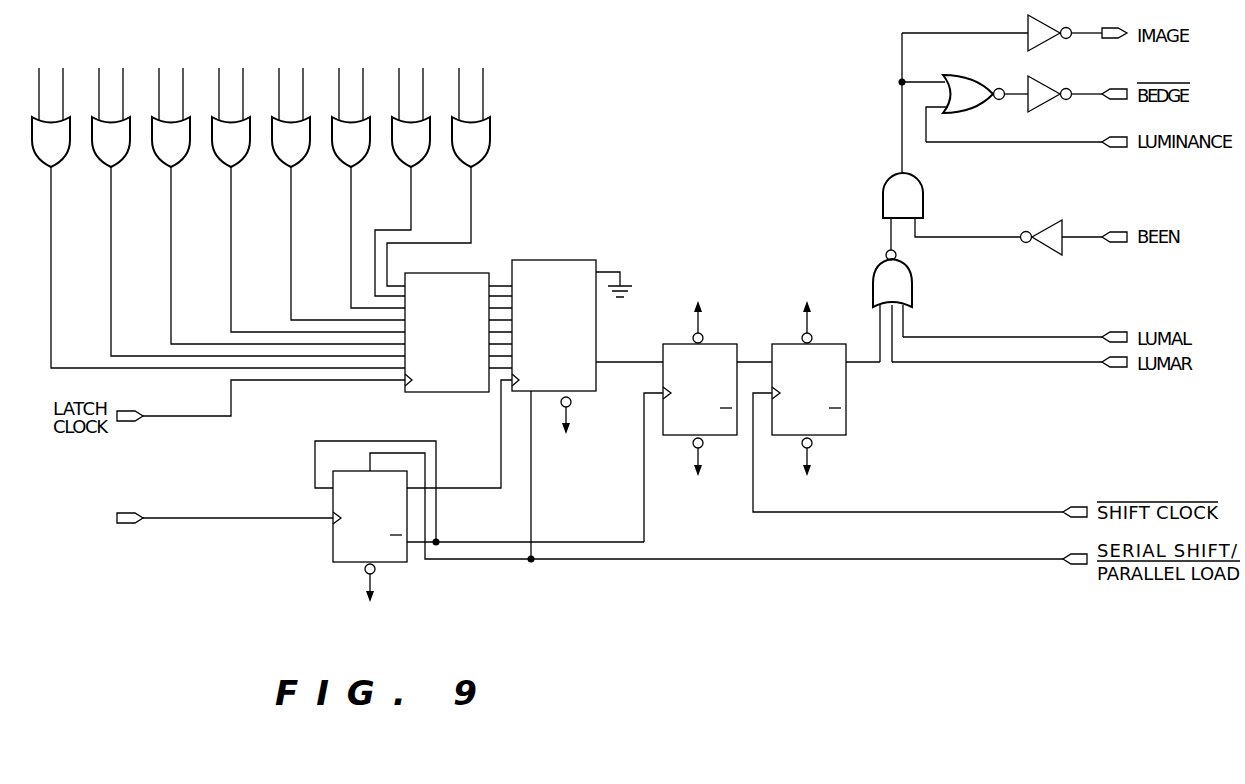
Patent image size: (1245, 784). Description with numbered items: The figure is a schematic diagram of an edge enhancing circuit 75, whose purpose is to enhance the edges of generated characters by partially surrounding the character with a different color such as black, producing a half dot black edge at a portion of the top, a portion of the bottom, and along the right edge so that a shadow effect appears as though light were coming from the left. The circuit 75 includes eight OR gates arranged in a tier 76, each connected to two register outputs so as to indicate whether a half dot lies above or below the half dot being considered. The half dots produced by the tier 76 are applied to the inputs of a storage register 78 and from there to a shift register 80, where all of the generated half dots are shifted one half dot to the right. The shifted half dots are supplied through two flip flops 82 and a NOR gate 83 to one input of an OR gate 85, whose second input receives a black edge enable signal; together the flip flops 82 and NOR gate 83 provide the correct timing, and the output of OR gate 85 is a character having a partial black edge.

The edge enhancing circuit 75 is at (571, 653).
The tier of OR gates 76 is at (520, 135).
The storage register 78 is at (457, 306).
The shift register 80 is at (565, 306).
The flip flops 82 is at (752, 262).
The NOR gate 83 is at (911, 298).
The OR gate 85 is at (921, 192).